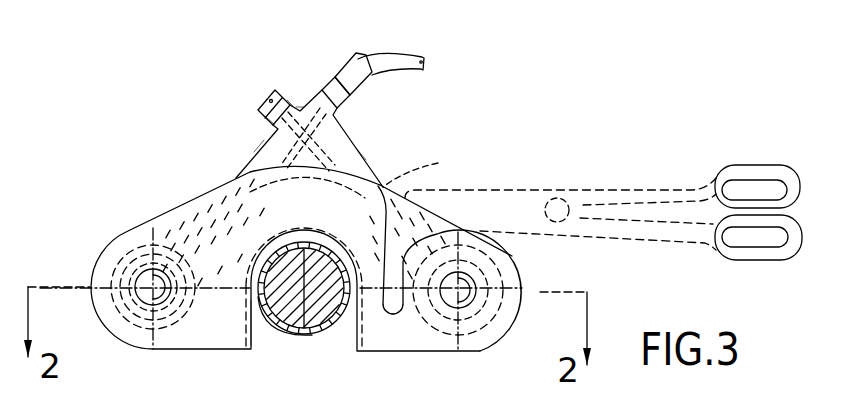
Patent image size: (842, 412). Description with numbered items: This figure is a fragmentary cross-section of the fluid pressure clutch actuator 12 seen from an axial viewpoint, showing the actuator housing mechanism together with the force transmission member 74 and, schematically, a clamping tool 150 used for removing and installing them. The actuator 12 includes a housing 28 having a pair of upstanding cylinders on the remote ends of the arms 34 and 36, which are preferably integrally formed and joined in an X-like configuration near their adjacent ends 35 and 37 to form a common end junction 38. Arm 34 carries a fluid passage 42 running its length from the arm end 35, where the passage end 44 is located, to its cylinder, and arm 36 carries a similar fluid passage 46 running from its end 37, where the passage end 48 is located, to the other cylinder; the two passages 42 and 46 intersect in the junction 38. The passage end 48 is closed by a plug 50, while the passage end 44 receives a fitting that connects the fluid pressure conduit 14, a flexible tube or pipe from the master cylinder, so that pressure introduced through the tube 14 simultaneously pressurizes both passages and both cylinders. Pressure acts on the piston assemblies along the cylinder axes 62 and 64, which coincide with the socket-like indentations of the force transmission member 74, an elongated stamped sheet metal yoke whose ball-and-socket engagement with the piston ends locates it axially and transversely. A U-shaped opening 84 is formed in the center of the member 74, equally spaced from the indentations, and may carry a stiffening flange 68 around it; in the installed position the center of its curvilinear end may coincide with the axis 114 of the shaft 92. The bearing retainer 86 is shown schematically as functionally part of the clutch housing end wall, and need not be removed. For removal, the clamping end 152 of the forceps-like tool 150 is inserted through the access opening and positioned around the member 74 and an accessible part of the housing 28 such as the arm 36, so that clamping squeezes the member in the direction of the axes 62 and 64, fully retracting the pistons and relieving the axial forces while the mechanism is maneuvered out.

The fluid pressure clutch actuator 12 is at (178, 135).
The fluid pressure conduit 14 is at (395, 55).
The housing 28 is at (243, 168).
The arm 34 is at (237, 177).
The arm end 35 is at (319, 90).
The arm 36 is at (352, 157).
The arm end 37 is at (267, 121).
The common end junction 38 is at (300, 108).
The fluid passage 42 is at (261, 147).
The passage end 44 is at (347, 123).
The fluid passage 46 is at (438, 163).
The passage end 48 is at (292, 102).
The plug 50 is at (267, 103).
The axis 62 is at (147, 295).
The axis 64 is at (460, 292).
The stiffening flange 68 is at (249, 305).
The force transmission member 74 is at (522, 275).
The U-shaped opening 84 is at (263, 335).
The bearing retainer 86 is at (332, 330).
The shaft 92 is at (316, 318).
The axis of shaft 114 is at (290, 316).
The clamping tool 150 is at (592, 175).
The clamping end 152 is at (397, 308).